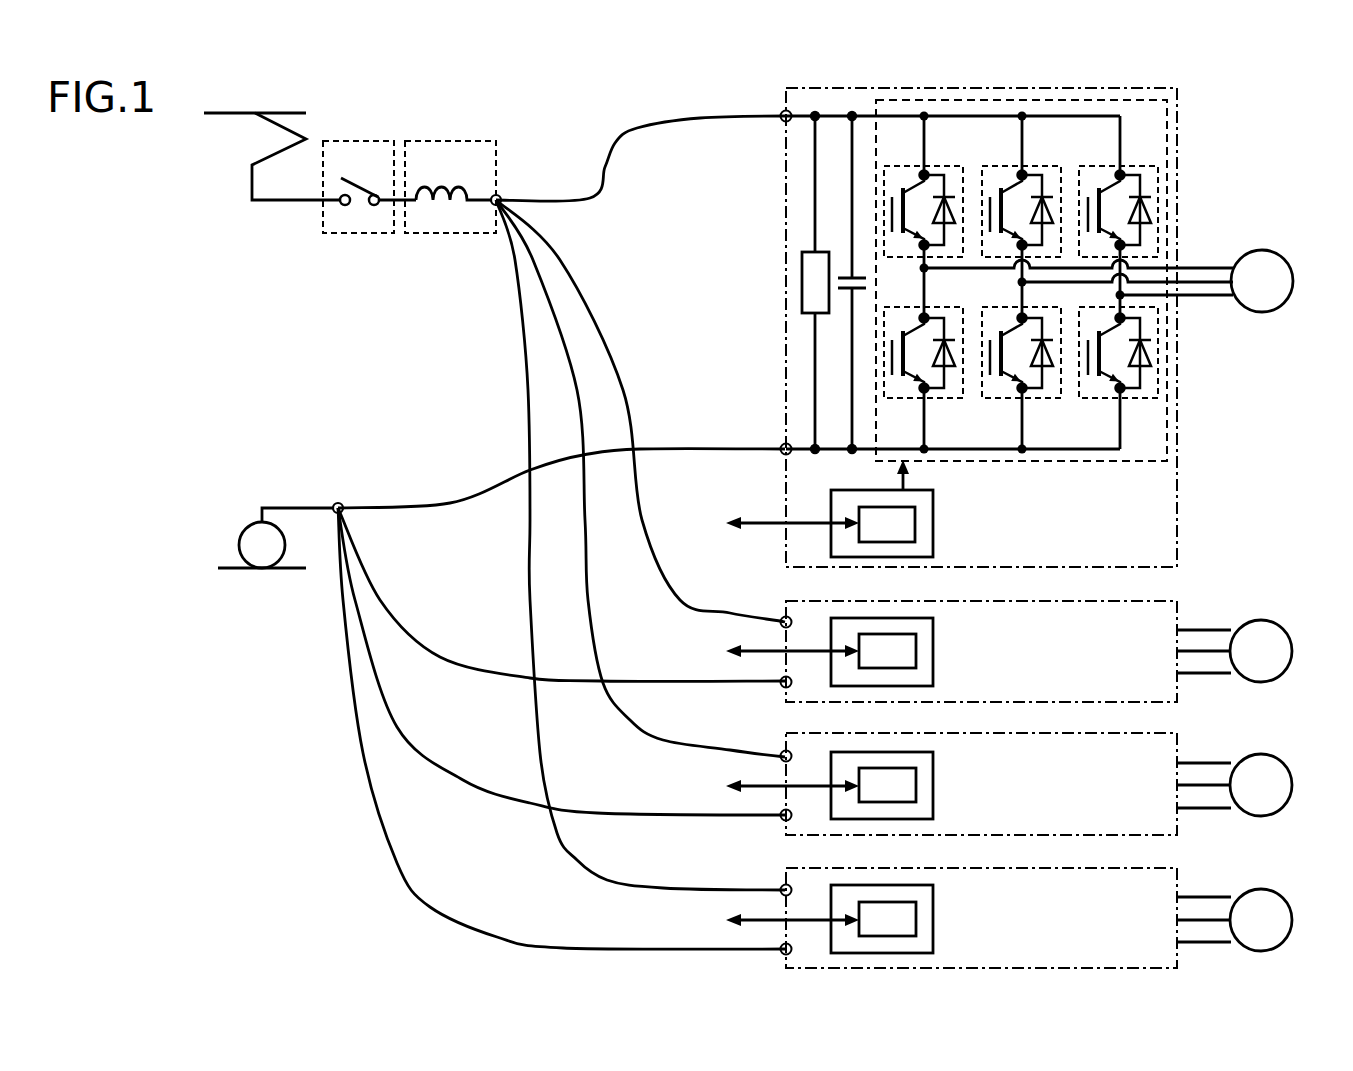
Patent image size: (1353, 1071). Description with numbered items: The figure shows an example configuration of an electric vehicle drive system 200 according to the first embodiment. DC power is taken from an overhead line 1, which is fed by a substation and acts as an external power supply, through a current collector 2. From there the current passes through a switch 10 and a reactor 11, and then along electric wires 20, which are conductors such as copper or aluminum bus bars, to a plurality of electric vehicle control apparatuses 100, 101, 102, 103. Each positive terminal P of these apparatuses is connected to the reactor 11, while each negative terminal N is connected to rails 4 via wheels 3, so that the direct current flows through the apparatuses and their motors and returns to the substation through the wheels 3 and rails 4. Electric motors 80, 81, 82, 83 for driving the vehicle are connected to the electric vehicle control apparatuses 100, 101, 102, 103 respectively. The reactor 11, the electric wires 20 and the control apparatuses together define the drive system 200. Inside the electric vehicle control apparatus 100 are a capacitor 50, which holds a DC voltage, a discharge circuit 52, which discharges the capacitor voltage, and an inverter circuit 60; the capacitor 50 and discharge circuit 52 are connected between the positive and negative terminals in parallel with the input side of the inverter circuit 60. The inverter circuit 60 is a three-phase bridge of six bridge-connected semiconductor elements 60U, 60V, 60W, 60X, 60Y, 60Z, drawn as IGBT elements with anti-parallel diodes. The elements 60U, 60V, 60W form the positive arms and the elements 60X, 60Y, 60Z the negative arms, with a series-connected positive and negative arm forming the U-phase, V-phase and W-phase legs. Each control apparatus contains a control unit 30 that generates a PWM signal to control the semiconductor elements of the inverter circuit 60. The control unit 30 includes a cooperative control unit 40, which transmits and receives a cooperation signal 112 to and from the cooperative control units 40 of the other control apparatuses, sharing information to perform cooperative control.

The overhead line 1 is at (228, 113).
The current collector 2 is at (268, 156).
The wheels 3 is at (250, 524).
The rails 4 is at (233, 570).
The switch 10 is at (353, 178).
The reactor 11 is at (443, 183).
The electric wires 20 is at (702, 116).
The control unit 30 is at (934, 496).
The cooperative control unit 40 is at (916, 524).
The capacitor 50 is at (845, 276).
The discharge circuit 52 is at (802, 283).
The inverter circuit 60 is at (1169, 104).
The semiconductor element 60U is at (936, 166).
The semiconductor element 60V is at (1034, 166).
The semiconductor element 60W is at (1150, 166).
The semiconductor element 60X is at (936, 398).
The semiconductor element 60Y is at (1034, 398).
The semiconductor element 60Z is at (1150, 398).
The electric motor 80 is at (1294, 281).
The electric motor 81 is at (1293, 651).
The electric motor 82 is at (1293, 785).
The electric motor 83 is at (1293, 920).
The electric vehicle control apparatus 100 is at (1122, 88).
The electric vehicle control apparatus 101 is at (1122, 601).
The electric vehicle control apparatus 102 is at (1122, 733).
The electric vehicle control apparatus 103 is at (1122, 868).
The cooperation signal 112 is at (777, 524).
The electric vehicle drive system 200 is at (648, 77).